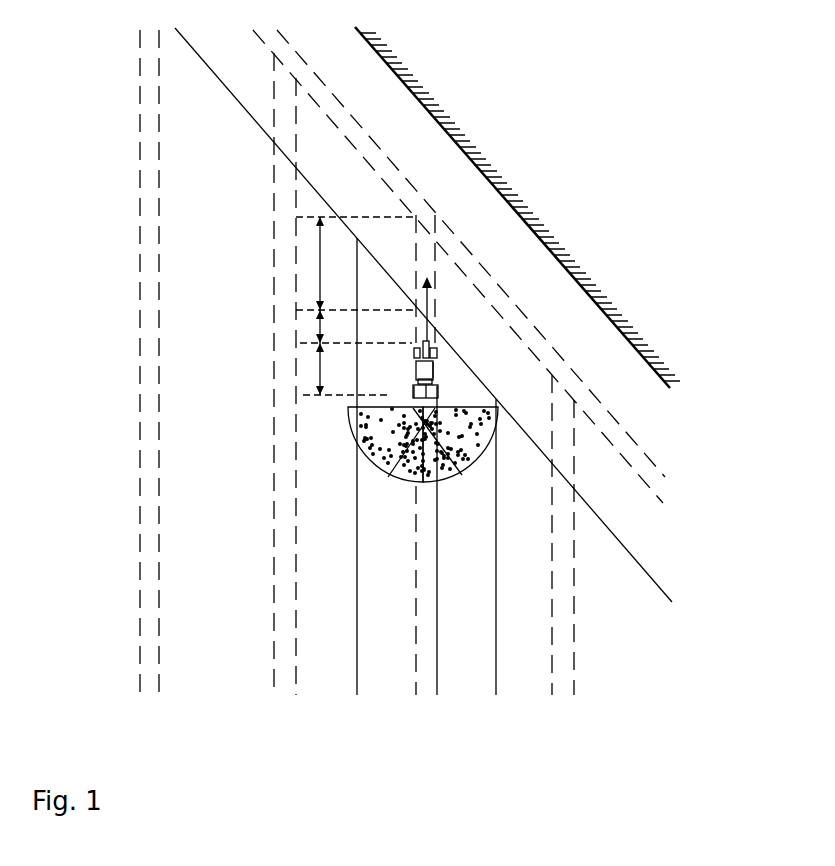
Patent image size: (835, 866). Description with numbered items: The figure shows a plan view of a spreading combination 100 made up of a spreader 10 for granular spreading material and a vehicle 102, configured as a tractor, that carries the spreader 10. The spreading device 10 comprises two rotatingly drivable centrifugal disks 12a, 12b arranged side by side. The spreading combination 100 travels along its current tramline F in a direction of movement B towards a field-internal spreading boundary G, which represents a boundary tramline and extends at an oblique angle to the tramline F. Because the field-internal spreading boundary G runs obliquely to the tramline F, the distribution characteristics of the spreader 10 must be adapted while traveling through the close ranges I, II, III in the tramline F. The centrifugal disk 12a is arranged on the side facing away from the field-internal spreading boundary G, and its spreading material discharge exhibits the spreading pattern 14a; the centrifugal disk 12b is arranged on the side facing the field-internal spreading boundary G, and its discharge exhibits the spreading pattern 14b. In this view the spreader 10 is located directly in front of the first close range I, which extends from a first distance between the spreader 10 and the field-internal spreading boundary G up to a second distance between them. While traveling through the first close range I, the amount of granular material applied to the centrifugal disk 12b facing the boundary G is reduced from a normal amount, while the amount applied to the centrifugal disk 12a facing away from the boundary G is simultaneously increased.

The spreading combination 100 is at (397, 340).
The spreader 10 is at (403, 377).
The centrifugal disk 12a is at (412, 394).
The centrifugal disk 12b is at (440, 395).
The vehicle 102 is at (438, 367).
The spreading pattern 14a is at (373, 480).
The spreading pattern 14b is at (468, 480).
The direction of movement B is at (437, 310).
The tramline F is at (428, 607).
The field-internal spreading boundary G is at (408, 183).
The first close range I is at (317, 376).
The second close range II is at (318, 325).
The third close range III is at (317, 248).